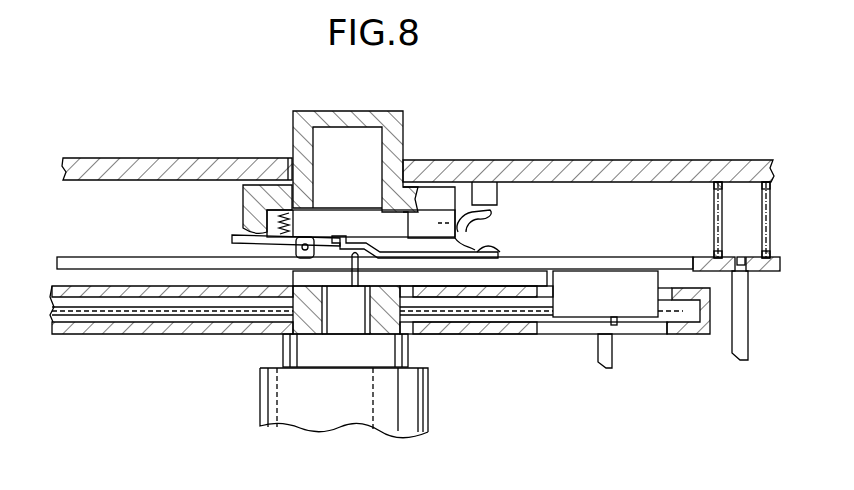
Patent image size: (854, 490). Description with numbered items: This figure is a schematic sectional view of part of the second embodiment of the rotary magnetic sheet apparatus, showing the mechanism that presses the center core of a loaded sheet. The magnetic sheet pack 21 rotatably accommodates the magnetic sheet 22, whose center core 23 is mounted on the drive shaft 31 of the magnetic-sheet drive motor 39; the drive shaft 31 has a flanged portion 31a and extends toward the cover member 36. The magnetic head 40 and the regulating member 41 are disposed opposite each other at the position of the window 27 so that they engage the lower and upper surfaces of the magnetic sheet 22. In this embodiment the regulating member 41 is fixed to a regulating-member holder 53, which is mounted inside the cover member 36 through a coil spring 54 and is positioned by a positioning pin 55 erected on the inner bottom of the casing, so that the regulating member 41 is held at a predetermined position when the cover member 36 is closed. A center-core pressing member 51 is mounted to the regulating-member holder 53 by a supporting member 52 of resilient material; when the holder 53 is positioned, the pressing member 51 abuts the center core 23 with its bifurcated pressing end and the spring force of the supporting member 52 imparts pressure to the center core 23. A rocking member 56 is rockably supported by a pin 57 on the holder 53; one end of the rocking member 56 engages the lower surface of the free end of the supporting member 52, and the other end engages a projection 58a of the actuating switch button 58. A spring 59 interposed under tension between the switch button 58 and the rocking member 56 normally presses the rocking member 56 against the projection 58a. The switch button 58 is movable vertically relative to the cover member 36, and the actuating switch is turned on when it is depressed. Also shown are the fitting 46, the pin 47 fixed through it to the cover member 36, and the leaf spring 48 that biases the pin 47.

The magnetic sheet pack 21 is at (160, 334).
The magnetic sheet 22 is at (482, 320).
The center core 23 is at (397, 335).
The window 27 is at (565, 335).
The drive shaft 31 is at (290, 332).
The flanged portion 31a is at (265, 358).
The cover member 36 is at (570, 163).
The magnetic-sheet drive motor 39 is at (420, 414).
The magnetic head 40 is at (615, 323).
The regulating member 41 is at (632, 285).
The fitting 46 is at (490, 190).
The pin 47 is at (500, 247).
The leaf spring 48 is at (490, 221).
The center-core pressing member 51 is at (352, 268).
The supporting member 52 is at (345, 239).
The regulating-member holder 53 is at (578, 263).
The coil spring 54 is at (714, 213).
The positioning pin 55 is at (733, 336).
The rocking member 56 is at (232, 240).
The pin 57 is at (308, 240).
The actuating switch button 58 is at (360, 111).
The projection 58a is at (250, 233).
The spring 59 is at (290, 205).